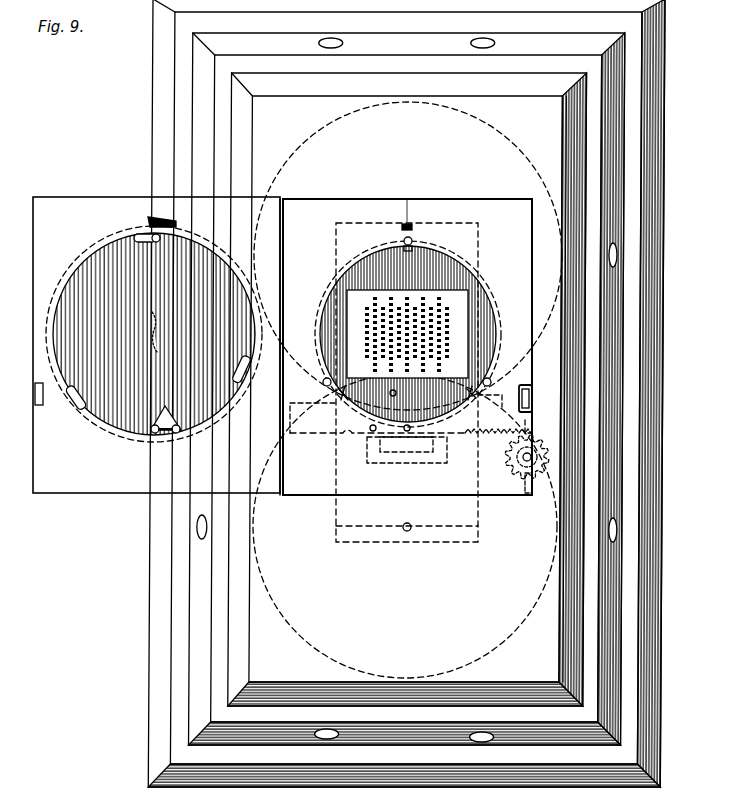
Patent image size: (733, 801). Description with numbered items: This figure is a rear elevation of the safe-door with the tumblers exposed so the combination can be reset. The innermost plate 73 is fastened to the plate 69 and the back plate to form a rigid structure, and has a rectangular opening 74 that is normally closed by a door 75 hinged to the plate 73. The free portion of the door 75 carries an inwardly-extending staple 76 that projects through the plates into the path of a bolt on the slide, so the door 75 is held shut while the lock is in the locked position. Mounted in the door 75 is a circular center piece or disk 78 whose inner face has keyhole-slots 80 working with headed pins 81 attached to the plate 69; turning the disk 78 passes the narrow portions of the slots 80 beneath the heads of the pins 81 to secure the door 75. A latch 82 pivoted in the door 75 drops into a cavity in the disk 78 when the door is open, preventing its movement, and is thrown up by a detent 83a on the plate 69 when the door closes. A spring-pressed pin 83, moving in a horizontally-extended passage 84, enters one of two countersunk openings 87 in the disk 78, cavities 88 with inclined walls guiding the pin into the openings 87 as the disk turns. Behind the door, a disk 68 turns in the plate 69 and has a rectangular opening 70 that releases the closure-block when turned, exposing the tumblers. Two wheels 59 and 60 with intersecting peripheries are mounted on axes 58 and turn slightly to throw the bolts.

The axes 58 is at (396, 250).
The wheel 59 is at (318, 646).
The wheel 60 is at (514, 138).
The disk 68 is at (440, 270).
The plate 69 is at (426, 382).
The rectangular opening 70 is at (464, 292).
The innermost plate 73 is at (420, 184).
The rectangular opening 74 is at (453, 200).
The door 75 is at (156, 345).
The staple 76 is at (38, 405).
The circular center piece or disk 78 is at (154, 334).
The keyhole-slots 80 is at (138, 235).
The headed pins 81 is at (323, 383).
The latch 82 is at (168, 218).
The pin 83 is at (408, 431).
The detent 83a is at (406, 223).
The horizontally-extended passage 84 is at (527, 439).
The openings 87 is at (166, 411).
The cavities 88 is at (177, 433).